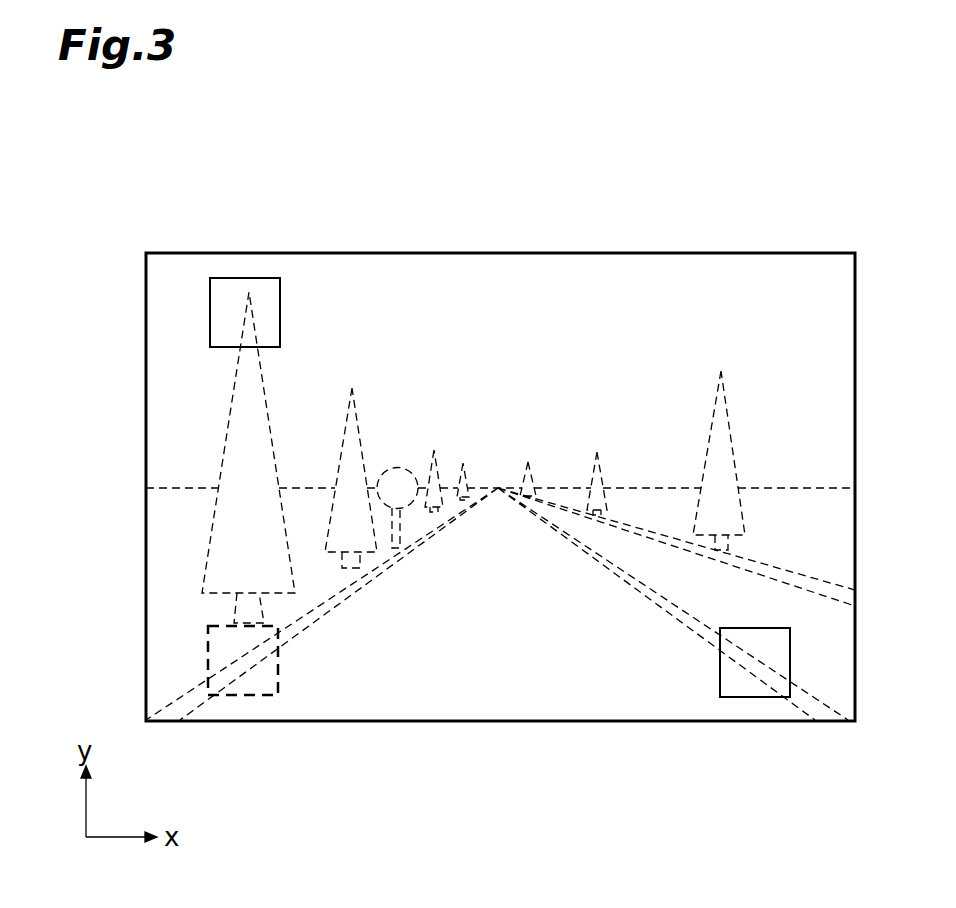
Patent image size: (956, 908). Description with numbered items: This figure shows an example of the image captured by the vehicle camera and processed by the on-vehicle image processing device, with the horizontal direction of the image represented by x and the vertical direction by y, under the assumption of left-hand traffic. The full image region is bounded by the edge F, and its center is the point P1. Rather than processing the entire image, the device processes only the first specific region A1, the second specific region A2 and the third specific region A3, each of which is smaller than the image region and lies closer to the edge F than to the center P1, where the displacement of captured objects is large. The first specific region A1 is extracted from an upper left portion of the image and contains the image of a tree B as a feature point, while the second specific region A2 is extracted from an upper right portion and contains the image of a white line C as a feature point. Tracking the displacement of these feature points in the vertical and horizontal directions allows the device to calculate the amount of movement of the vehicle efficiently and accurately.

The edge of the image region F is at (539, 252).
The first specific region A1 is at (281, 311).
The second specific region A2 is at (720, 670).
The third specific region A3 is at (279, 670).
The tree B is at (222, 458).
The center of the image region P1 is at (498, 487).
The white line C is at (671, 611).